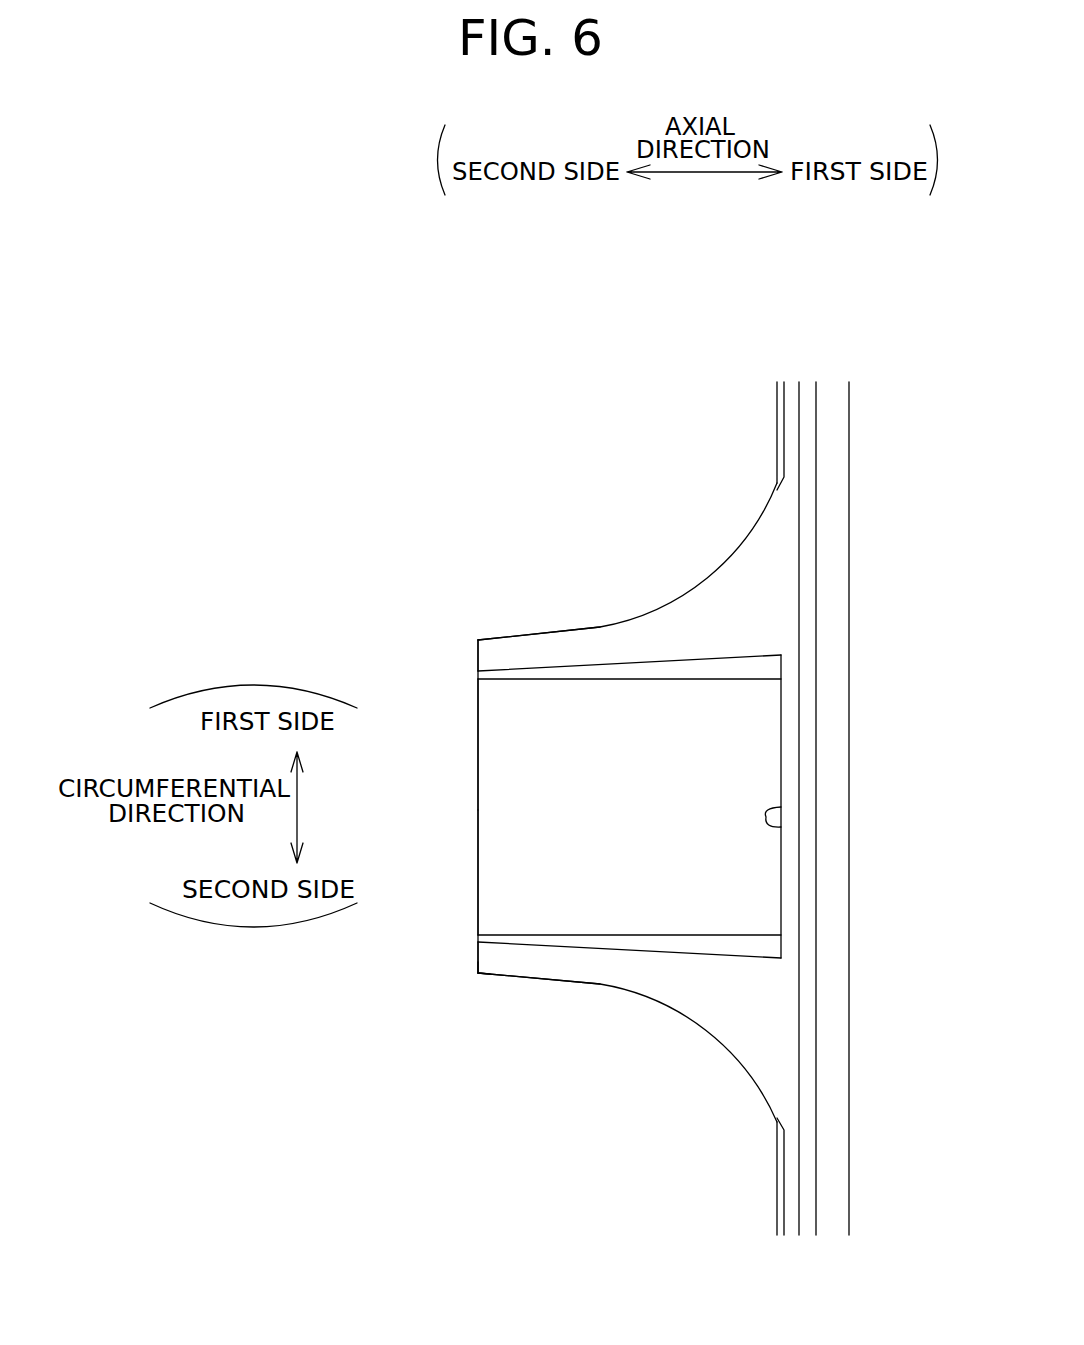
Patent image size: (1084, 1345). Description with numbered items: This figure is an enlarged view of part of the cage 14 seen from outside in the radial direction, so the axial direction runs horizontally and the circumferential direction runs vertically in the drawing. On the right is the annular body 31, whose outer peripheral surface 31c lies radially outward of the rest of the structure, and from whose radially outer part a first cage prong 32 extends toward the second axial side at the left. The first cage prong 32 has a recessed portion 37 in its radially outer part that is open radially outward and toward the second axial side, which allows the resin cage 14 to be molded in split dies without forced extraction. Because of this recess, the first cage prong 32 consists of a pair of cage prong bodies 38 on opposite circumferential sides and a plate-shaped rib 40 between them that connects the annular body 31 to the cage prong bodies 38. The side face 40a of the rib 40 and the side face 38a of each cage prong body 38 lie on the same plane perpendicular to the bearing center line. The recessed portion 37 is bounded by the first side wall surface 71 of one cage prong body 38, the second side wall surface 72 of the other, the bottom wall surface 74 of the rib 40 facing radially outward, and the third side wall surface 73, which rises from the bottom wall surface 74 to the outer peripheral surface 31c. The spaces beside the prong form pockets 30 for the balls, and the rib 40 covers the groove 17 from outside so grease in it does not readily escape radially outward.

The cage 14 is at (868, 489).
The groove 17 is at (687, 878).
The pocket 30 is at (613, 460).
The annular body 31 is at (850, 1188).
The outer peripheral surface 31c is at (832, 1043).
The first cage prong 32 is at (472, 993).
The recessed portion 37 is at (710, 754).
The cage prong body 38 is at (510, 653).
The side face of cage prong body 38a is at (477, 659).
The rib 40 is at (515, 792).
The side face of rib 40a is at (478, 890).
The first side wall surface 71 is at (658, 672).
The second side wall surface 72 is at (657, 945).
The third side wall surface 73 is at (781, 807).
The bottom wall surface 74 is at (563, 745).